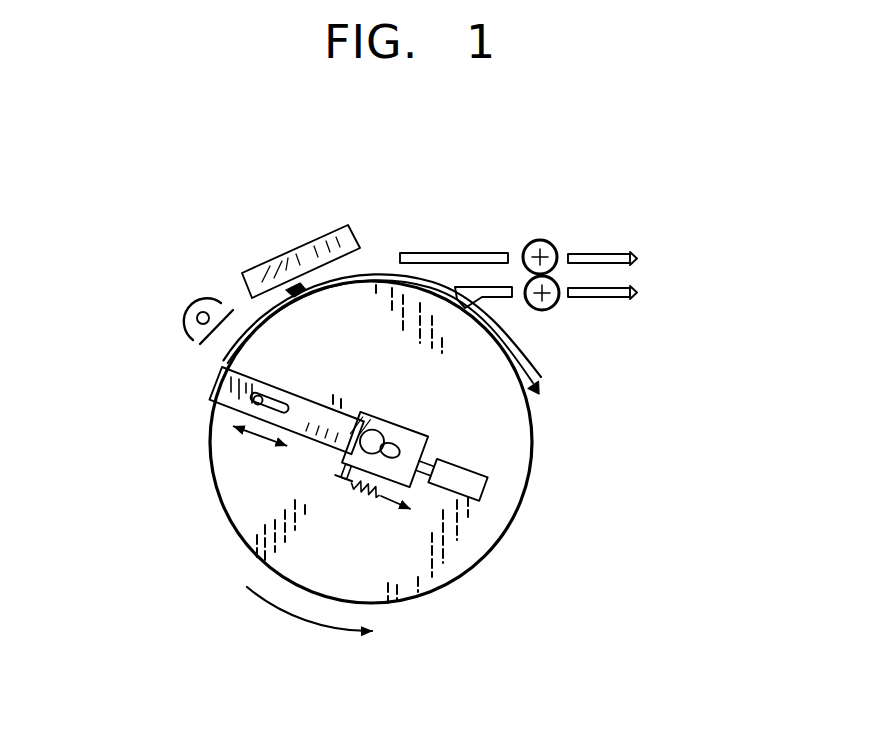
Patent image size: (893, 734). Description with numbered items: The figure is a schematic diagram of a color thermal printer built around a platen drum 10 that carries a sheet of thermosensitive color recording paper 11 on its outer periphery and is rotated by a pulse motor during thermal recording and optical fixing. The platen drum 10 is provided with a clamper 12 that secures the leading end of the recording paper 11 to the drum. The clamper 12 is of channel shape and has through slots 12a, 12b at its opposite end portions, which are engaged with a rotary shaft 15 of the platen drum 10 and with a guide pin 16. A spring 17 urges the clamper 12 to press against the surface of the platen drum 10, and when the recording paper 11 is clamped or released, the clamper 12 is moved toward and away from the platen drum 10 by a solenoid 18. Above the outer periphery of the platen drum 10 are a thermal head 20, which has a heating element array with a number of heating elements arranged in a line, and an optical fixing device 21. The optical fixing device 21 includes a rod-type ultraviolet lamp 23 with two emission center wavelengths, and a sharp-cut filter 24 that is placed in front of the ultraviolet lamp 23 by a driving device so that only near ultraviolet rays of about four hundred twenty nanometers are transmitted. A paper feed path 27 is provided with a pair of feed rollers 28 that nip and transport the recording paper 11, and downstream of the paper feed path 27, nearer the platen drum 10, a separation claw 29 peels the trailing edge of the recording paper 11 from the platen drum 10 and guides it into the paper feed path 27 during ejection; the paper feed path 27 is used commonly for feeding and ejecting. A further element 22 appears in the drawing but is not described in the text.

The platen drum 10 is at (228, 491).
The thermosensitive color recording paper 11 is at (376, 274).
The clamper 12 is at (258, 406).
The through slot 12a is at (398, 441).
The through slot 12b is at (285, 398).
The rotary shaft 15 is at (359, 446).
The guide pin 16 is at (262, 393).
The spring 17 is at (371, 498).
The solenoid 18 is at (483, 497).
The thermal head 20 is at (288, 252).
The optical fixing device 21 is at (131, 324).
The gripper 22 is at (303, 291).
The ultraviolet lamp 23 is at (189, 313).
The sharp-cut filter 24 is at (212, 358).
The paper feed path 27 is at (594, 272).
The feed rollers 28 is at (541, 240).
The separation claw 29 is at (470, 287).